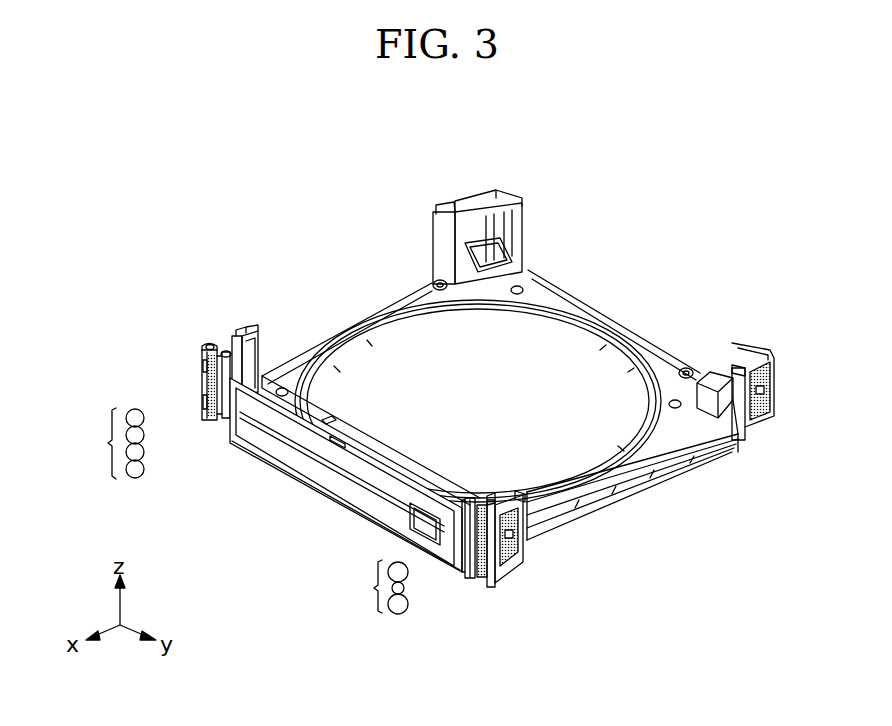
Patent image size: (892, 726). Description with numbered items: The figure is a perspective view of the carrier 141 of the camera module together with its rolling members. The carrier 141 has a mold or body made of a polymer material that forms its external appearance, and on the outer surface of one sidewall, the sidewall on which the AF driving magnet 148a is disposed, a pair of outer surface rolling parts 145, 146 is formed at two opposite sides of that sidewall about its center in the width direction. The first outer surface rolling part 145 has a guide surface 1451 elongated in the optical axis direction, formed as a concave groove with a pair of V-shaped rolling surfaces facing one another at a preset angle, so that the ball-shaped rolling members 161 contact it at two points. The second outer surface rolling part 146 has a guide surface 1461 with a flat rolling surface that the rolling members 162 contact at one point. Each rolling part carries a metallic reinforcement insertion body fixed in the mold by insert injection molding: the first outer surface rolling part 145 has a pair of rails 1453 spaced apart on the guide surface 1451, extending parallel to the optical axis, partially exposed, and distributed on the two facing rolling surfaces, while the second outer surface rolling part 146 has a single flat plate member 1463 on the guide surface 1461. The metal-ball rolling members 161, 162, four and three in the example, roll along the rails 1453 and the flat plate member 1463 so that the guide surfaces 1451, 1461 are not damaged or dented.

The carrier 141 is at (387, 307).
The first outer surface rolling part 145 is at (195, 390).
The guide surface 1451 is at (217, 393).
The rails 1453 is at (212, 345).
The second outer surface rolling part 146 is at (480, 541).
The guide surface 1461 is at (472, 535).
The flat plate member 1463 is at (492, 508).
The AF driving magnet 148a is at (302, 463).
The rolling members 161 is at (111, 443).
The rolling members 162 is at (374, 587).